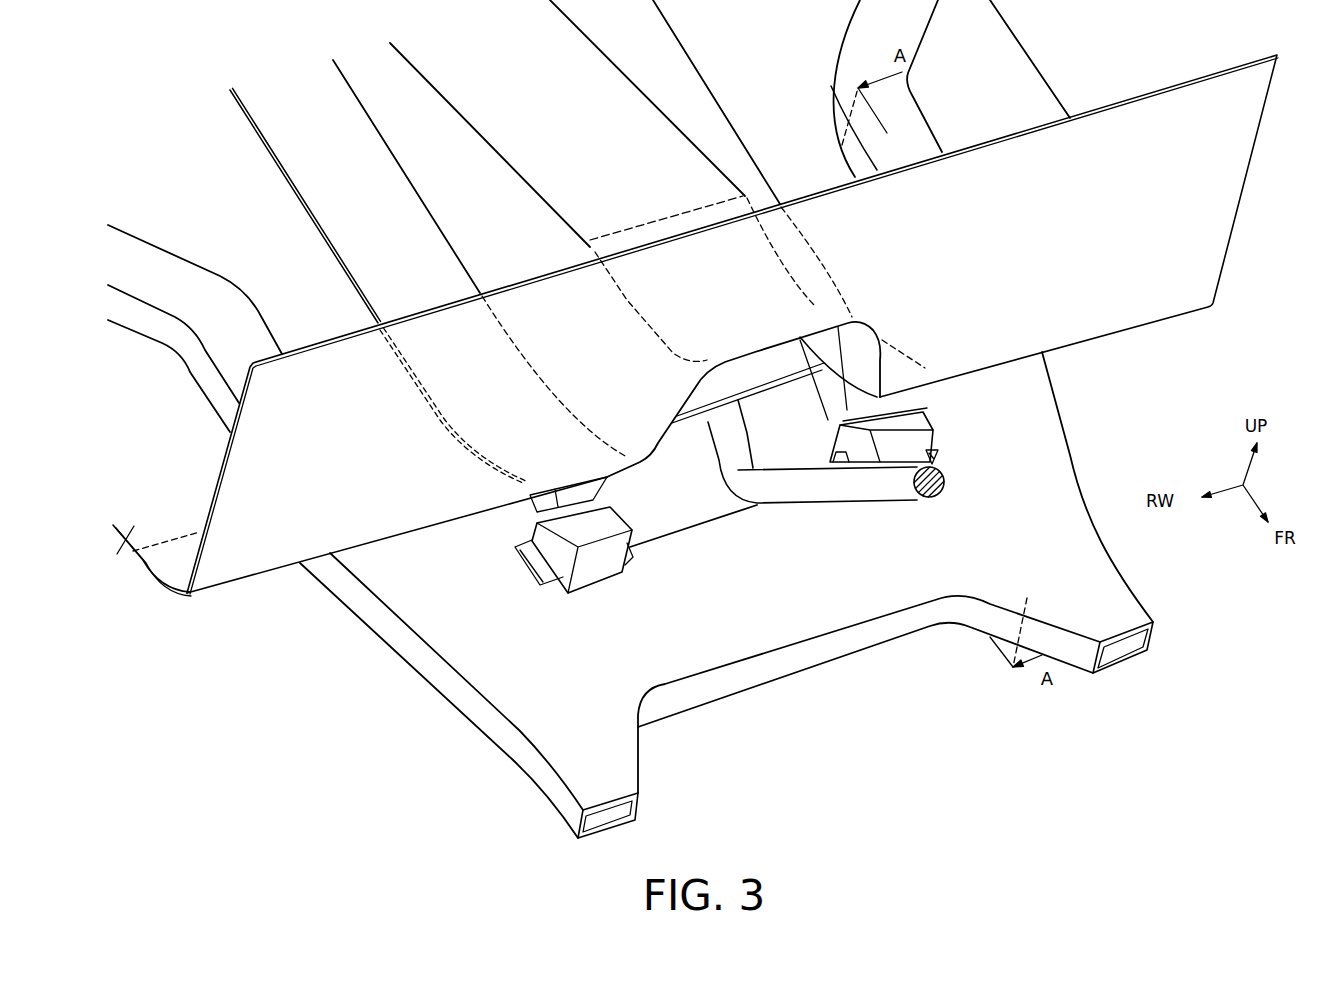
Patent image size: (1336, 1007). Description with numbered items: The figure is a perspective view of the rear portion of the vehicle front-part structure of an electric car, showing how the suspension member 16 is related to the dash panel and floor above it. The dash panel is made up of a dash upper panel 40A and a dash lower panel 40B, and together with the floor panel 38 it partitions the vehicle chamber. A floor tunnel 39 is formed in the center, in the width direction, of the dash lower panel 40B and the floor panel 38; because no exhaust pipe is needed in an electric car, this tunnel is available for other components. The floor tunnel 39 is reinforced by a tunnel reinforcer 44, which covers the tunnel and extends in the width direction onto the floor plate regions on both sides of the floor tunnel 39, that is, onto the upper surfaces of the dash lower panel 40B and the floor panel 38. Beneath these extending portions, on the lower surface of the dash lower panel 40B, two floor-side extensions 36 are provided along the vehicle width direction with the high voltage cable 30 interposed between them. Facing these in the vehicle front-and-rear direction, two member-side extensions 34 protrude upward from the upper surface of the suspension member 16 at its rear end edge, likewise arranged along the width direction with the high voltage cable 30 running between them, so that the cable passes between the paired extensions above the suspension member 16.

The suspension member 16 is at (703, 703).
The high voltage cable 30 is at (854, 490).
The member-side extension 34 is at (597, 568).
The floor-side extension 36 is at (597, 490).
The floor panel 38 is at (116, 555).
The floor tunnel 39 is at (681, 98).
The dash upper panel 40A is at (252, 538).
The dash lower panel 40B is at (170, 563).
The tunnel reinforcer 44 is at (350, 197).